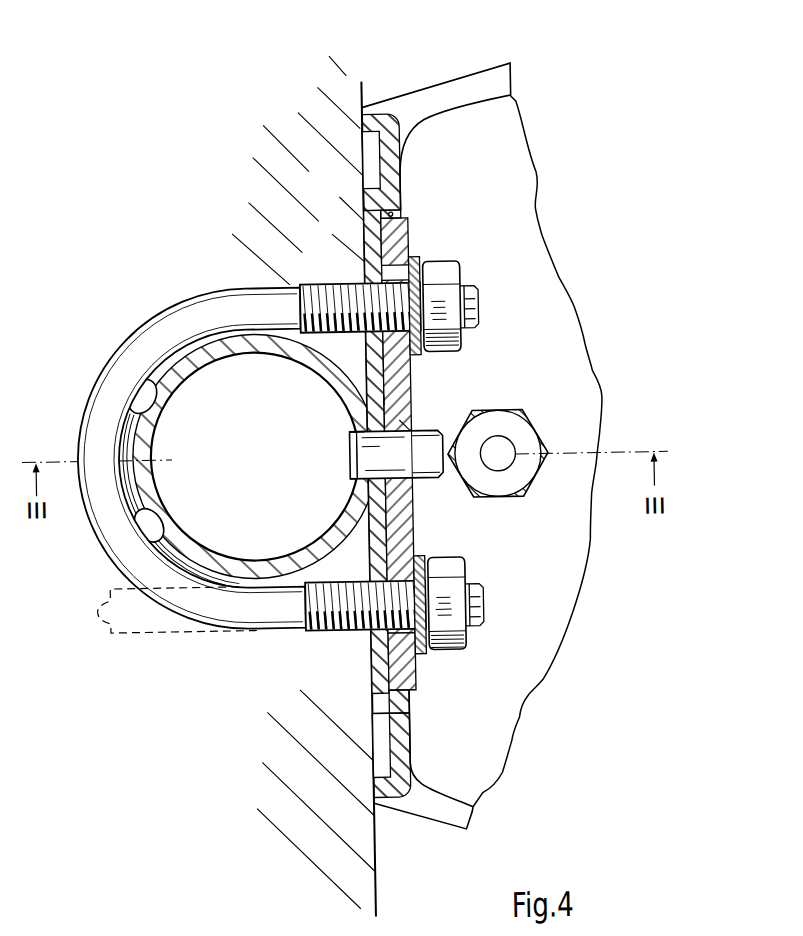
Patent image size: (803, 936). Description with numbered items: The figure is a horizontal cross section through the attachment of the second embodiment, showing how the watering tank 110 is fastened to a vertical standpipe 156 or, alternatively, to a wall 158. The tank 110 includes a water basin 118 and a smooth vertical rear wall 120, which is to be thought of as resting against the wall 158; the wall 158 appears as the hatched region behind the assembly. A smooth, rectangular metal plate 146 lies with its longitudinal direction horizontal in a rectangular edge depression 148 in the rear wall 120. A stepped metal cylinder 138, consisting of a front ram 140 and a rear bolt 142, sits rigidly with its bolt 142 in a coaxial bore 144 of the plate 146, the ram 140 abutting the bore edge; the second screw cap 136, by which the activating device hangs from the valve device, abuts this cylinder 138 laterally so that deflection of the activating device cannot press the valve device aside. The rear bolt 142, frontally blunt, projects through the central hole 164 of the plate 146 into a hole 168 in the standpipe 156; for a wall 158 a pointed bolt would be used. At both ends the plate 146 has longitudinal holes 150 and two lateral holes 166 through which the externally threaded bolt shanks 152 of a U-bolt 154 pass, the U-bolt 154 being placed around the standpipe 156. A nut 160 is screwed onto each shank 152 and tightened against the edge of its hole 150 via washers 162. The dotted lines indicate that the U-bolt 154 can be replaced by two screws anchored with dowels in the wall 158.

The watering tank 110 is at (453, 83).
The water basin 118 is at (562, 303).
The rear wall 120 is at (378, 192).
The second screw cap 136 is at (527, 497).
The stepped metal cylinder 138 is at (365, 470).
The front ram 140 is at (427, 479).
The rear bolt 142 is at (347, 474).
The coaxial bore 144 is at (404, 428).
The metal plate 146 is at (420, 532).
The rectangular edge depression 148 is at (401, 212).
The longitudinal holes 150 is at (407, 247).
The bolt shanks 152 is at (326, 301).
The U-bolt 154 is at (198, 292).
The standpipe 156 is at (221, 368).
The wall 158 is at (322, 99).
The nut 160 is at (450, 274).
The washers 162 is at (464, 343).
The central hole 164 is at (399, 400).
The lateral holes 166 is at (366, 266).
The hole in the standpipe 168 is at (357, 437).